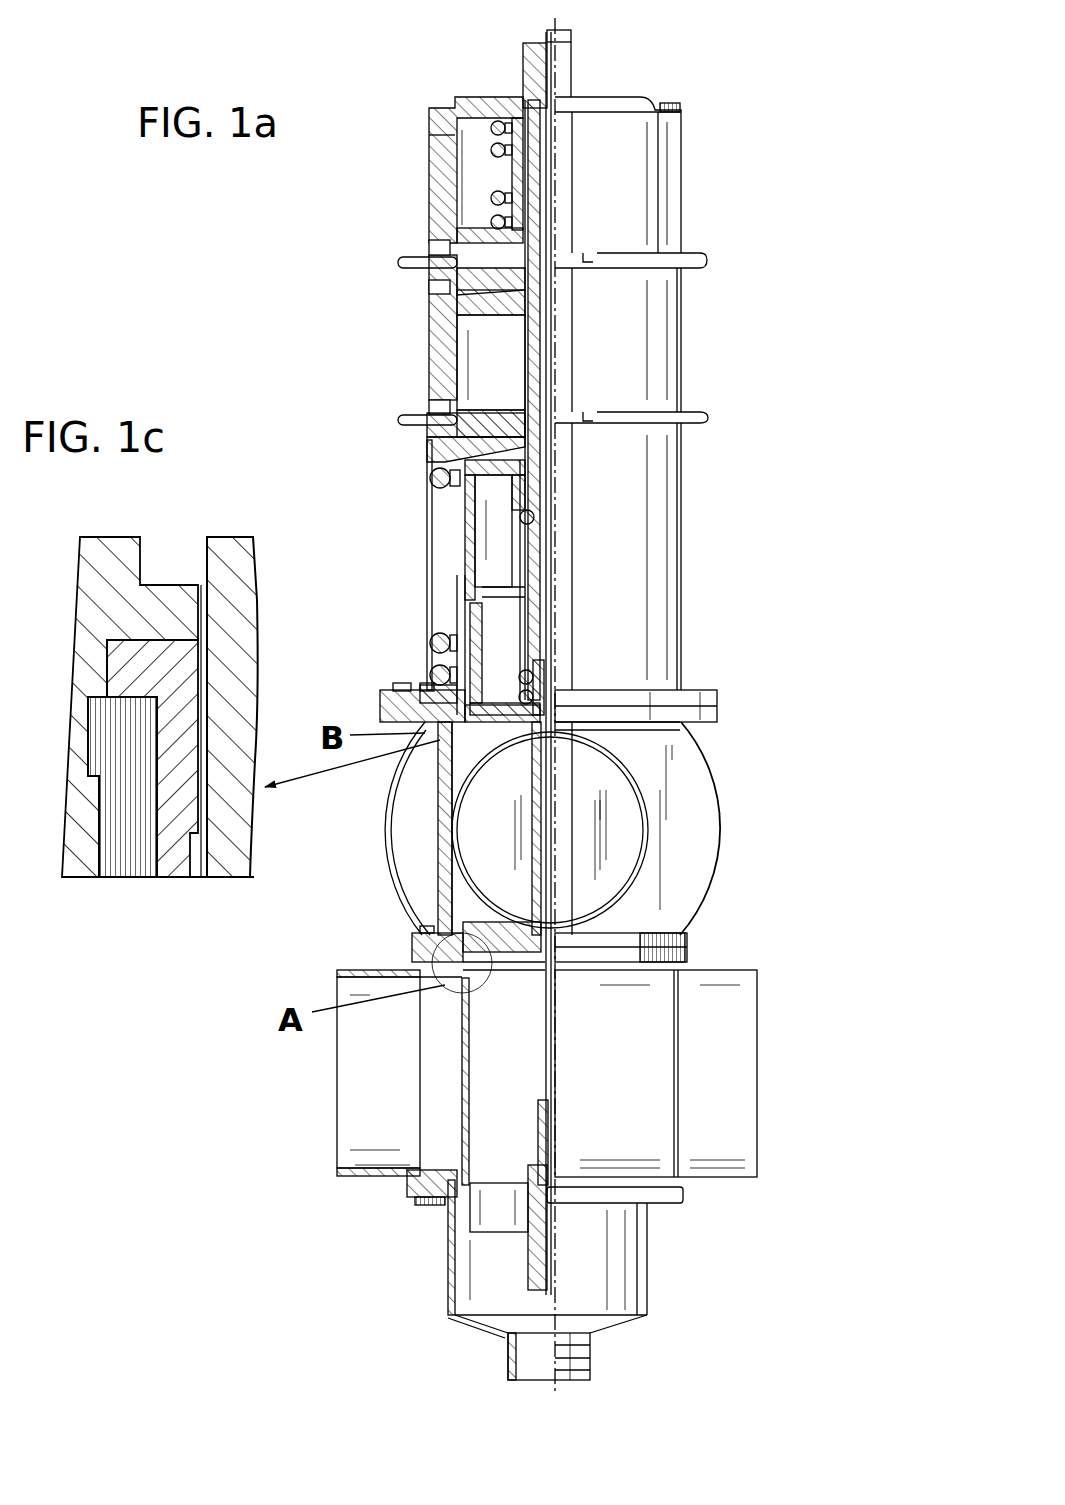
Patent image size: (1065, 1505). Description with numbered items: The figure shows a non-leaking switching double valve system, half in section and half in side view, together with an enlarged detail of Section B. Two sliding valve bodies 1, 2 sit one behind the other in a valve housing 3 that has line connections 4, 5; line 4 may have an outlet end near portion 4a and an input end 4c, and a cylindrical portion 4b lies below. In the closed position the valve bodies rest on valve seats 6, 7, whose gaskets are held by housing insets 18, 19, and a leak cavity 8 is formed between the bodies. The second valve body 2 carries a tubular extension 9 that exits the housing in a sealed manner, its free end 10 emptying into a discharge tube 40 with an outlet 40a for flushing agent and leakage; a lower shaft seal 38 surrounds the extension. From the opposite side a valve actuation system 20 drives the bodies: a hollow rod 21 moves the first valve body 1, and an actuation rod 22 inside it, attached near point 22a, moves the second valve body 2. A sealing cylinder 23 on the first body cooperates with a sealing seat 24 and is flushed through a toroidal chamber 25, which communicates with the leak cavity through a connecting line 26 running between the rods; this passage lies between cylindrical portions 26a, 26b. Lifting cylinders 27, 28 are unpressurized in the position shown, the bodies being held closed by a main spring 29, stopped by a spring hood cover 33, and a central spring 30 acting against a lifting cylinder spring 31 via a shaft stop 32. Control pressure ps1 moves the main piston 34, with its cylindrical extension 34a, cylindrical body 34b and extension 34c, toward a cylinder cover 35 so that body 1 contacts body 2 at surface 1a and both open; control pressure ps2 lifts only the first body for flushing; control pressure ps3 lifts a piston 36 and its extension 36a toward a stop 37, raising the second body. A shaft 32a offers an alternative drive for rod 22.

In FIG. 1a, the first sliding valve body 1 is at (635, 905).
In FIG. 1a, the surface 1a is at (440, 958).
In FIG. 1a, the second sliding valve body 2 is at (513, 967).
In FIG. 1a, the valve housing 3 is at (722, 796).
In FIG. 1a, the line connection 4 is at (365, 1098).
In FIG. 1a, the outlet portion of line 4a is at (735, 1073).
In FIG. 1a, the cylindrical portion 4b is at (620, 1265).
In FIG. 1a, the input end of line 4c is at (337, 1075).
In FIG. 1a, the line connection 5 is at (483, 823).
In FIG. 1a, the valve seat 6 is at (458, 912).
In FIG. 1a, the valve seat 7 is at (453, 992).
In FIG. 1a, the leak cavity 8 is at (515, 962).
In FIG. 1a, the tubular extension 9 is at (472, 1075).
In FIG. 1a, the free end of tubular extension 10 is at (487, 1215).
In FIG. 1a, the housing inset 18 is at (420, 940).
In FIG. 1a, the housing inset 19 is at (448, 866).
In FIG. 1a, the valve actuation system 20 is at (707, 356).
In FIG. 1a, the hollow rod 21 is at (542, 782).
In FIG. 1a, the actuation rod 22 is at (680, 722).
In FIG. 1a, the attachment point 22a is at (687, 953).
In FIG. 1c, the sealing cylinder 23 is at (232, 855).
In FIG. 1a, the sealing cylinder 23 is at (505, 672).
In FIG. 1c, the sealing seat 24 is at (196, 884).
In FIG. 1c, the toroidal chamber 25 is at (170, 558).
In FIG. 1a, the toroidal chamber 25 is at (466, 608).
In FIG. 1a, the connecting line 26 is at (485, 628).
In FIG. 1a, the cylindrical portion 26a is at (437, 652).
In FIG. 1a, the additional portion 26b is at (485, 633).
In FIG. 1a, the lifting cylinder 27 is at (630, 327).
In FIG. 1a, the lifting cylinder 28 is at (614, 190).
In FIG. 1a, the main spring 29 is at (438, 478).
In FIG. 1a, the central spring 30 is at (540, 512).
In FIG. 1a, the lifting cylinder spring 31 is at (520, 152).
In FIG. 1a, the shaft stop 32 is at (528, 62).
In FIG. 1a, the shaft 32a is at (575, 40).
In FIG. 1a, the spring hood cover 33 is at (432, 439).
In FIG. 1a, the main piston 34 is at (500, 315).
In FIG. 1a, the cylindrical extension 34a is at (525, 362).
In FIG. 1a, the cylindrical body 34b is at (465, 532).
In FIG. 1a, the extension 34c is at (545, 388).
In FIG. 1a, the cylinder cover 35 is at (497, 425).
In FIG. 1a, the piston 36 is at (480, 250).
In FIG. 1a, the piston extension 36a is at (522, 182).
In FIG. 1a, the stop 37 is at (553, 160).
In FIG. 1a, the lower shaft seal 38 is at (453, 1163).
In FIG. 1a, the discharge tube 40 is at (448, 1267).
In FIG. 1a, the outlet 40a is at (508, 1357).
In FIG. 1a, the control pressure ps1 is at (427, 287).
In FIG. 1a, the control pressure ps2 is at (427, 404).
In FIG. 1a, the control pressure ps3 is at (427, 246).